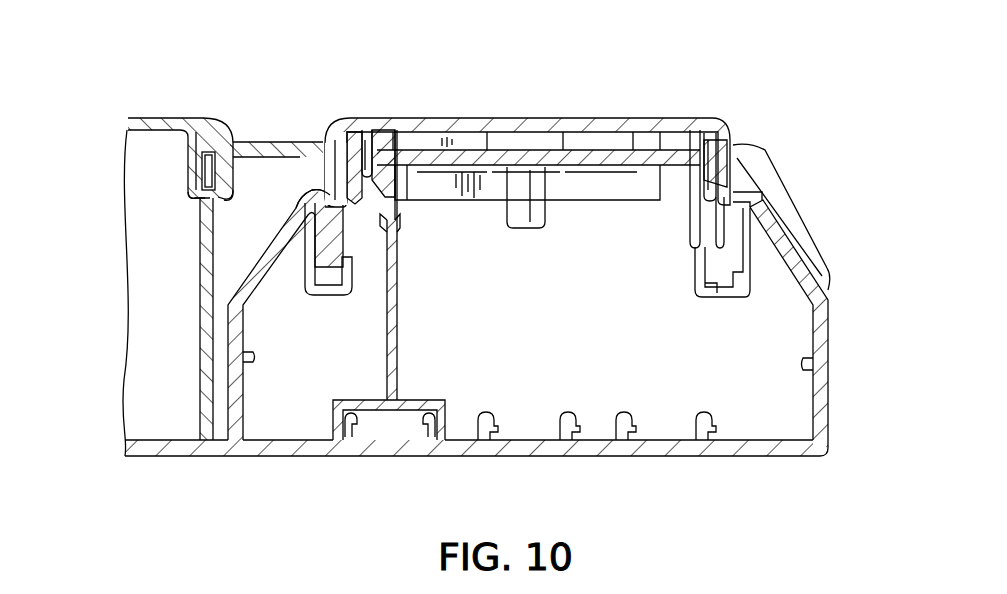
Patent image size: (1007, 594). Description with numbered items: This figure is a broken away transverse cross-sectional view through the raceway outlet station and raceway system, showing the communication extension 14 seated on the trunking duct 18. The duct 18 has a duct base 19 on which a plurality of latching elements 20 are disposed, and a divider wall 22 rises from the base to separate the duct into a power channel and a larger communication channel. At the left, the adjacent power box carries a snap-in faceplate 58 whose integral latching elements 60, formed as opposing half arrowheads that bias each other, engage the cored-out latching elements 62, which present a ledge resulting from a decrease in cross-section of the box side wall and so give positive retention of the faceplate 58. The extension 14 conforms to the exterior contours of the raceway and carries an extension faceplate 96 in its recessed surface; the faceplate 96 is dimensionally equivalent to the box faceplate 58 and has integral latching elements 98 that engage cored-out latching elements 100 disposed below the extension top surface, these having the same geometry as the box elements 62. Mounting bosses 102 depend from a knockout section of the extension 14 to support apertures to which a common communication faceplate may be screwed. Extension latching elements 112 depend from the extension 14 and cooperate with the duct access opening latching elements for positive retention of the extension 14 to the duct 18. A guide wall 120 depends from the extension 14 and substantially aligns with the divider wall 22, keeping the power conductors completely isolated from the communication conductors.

The communication extension 14 is at (773, 137).
The trunking duct 18 is at (747, 452).
The duct base 19 is at (603, 450).
The latching elements 20 is at (300, 187).
The divider wall 22 is at (395, 310).
The faceplate 58 is at (165, 117).
The latching elements 60 is at (198, 192).
The cored-out latching elements 62 is at (205, 163).
The extension faceplate 96 is at (560, 105).
The latching elements 98 is at (322, 150).
The cored-out latching elements 100 is at (340, 187).
The mounting bosses 102 is at (537, 205).
The extension latching elements 112 is at (305, 262).
The guide wall 120 is at (400, 220).